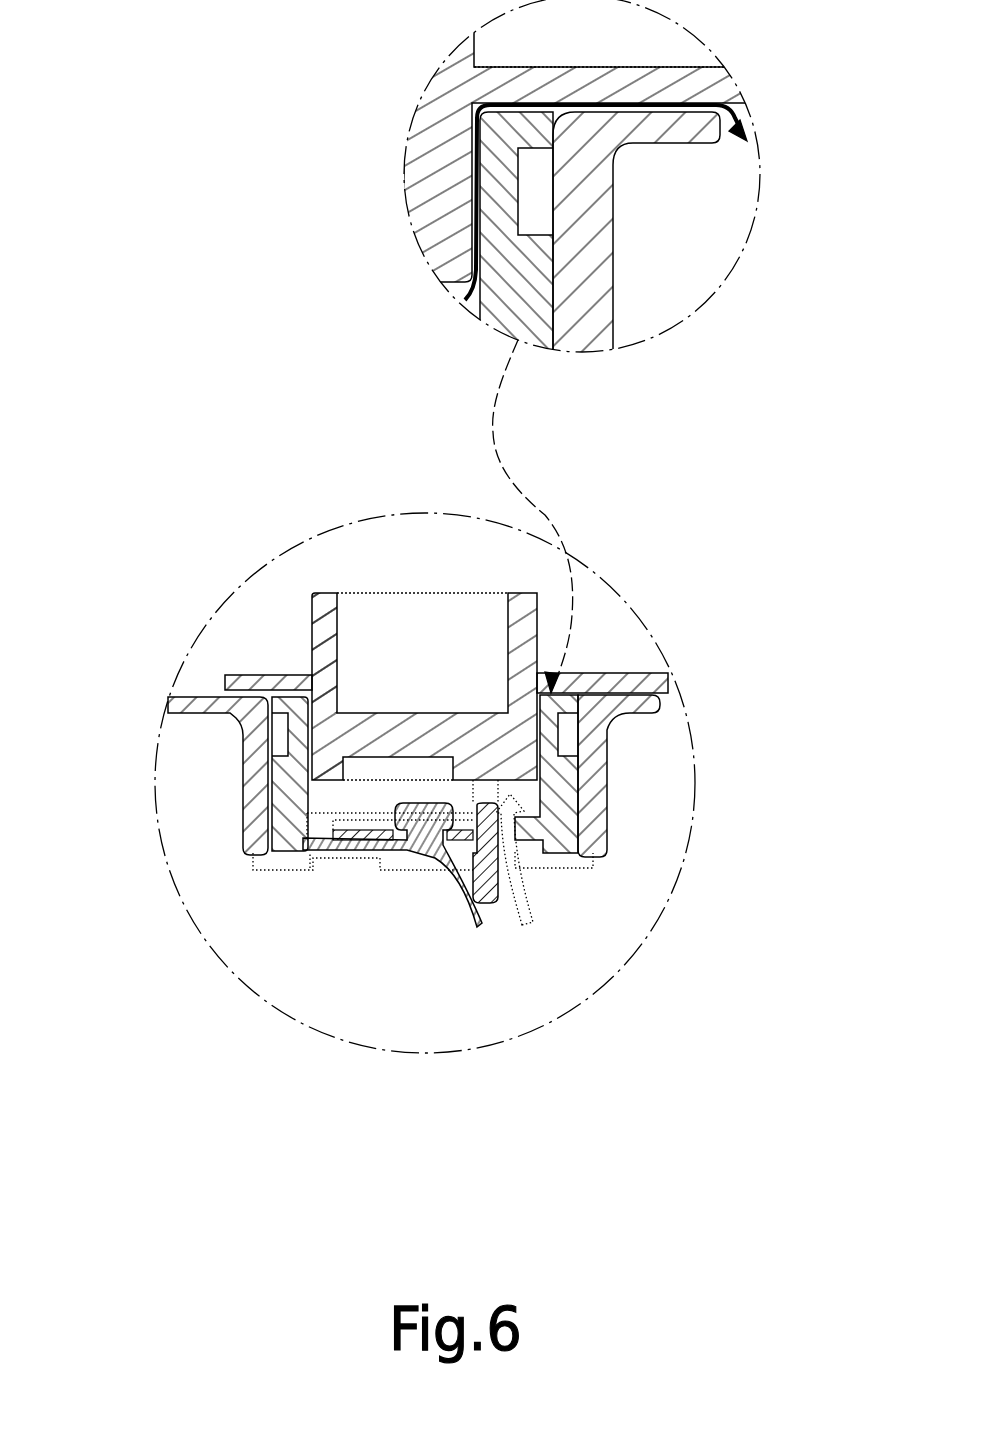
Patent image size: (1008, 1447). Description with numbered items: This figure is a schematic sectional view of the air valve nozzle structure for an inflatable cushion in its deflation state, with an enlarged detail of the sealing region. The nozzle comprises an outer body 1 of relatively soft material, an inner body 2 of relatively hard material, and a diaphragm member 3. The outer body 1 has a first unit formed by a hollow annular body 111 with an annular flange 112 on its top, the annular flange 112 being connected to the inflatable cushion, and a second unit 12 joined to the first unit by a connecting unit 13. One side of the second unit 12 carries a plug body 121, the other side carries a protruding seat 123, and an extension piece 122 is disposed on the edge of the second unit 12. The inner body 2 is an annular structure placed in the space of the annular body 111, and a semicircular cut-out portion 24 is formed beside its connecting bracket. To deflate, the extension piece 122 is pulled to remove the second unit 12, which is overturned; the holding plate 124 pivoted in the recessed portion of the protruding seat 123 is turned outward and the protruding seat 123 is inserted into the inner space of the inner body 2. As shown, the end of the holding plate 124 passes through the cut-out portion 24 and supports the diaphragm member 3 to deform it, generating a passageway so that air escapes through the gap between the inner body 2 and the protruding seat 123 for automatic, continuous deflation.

The outer body 1 is at (618, 862).
The inner body 2 is at (587, 773).
The diaphragm member 3 is at (450, 858).
The second unit 12 is at (450, 128).
The connecting unit 13 is at (633, 680).
The cut-out portion 24 is at (528, 890).
The annular body 111 is at (592, 280).
The annular flange 112 is at (670, 130).
The plug body 121 is at (320, 635).
The extension piece 122 is at (240, 680).
The protruding seat 123 is at (316, 762).
The holding plate 124 is at (488, 885).